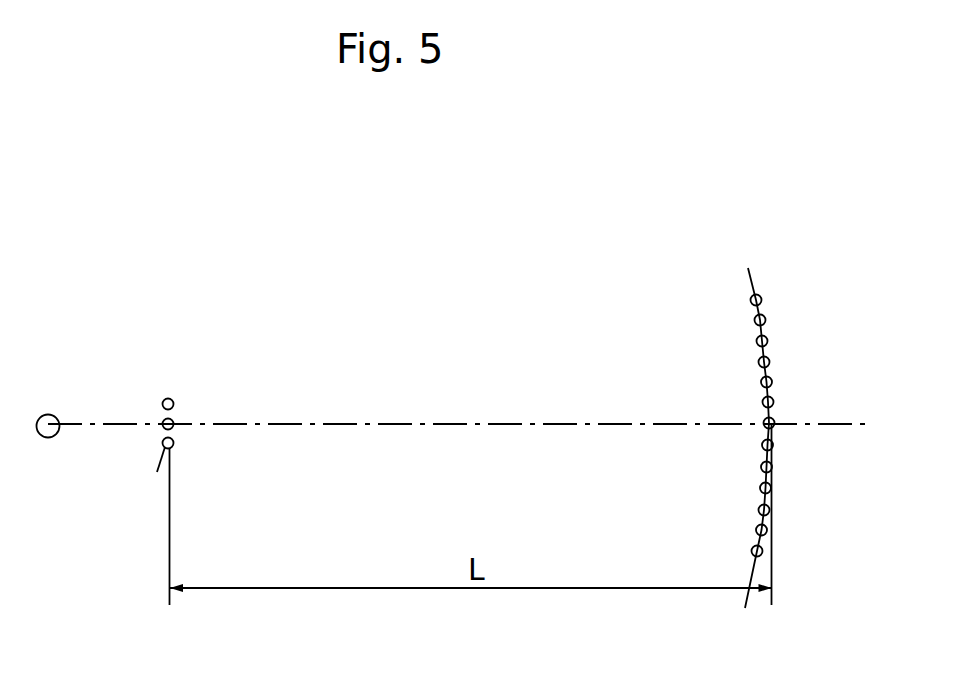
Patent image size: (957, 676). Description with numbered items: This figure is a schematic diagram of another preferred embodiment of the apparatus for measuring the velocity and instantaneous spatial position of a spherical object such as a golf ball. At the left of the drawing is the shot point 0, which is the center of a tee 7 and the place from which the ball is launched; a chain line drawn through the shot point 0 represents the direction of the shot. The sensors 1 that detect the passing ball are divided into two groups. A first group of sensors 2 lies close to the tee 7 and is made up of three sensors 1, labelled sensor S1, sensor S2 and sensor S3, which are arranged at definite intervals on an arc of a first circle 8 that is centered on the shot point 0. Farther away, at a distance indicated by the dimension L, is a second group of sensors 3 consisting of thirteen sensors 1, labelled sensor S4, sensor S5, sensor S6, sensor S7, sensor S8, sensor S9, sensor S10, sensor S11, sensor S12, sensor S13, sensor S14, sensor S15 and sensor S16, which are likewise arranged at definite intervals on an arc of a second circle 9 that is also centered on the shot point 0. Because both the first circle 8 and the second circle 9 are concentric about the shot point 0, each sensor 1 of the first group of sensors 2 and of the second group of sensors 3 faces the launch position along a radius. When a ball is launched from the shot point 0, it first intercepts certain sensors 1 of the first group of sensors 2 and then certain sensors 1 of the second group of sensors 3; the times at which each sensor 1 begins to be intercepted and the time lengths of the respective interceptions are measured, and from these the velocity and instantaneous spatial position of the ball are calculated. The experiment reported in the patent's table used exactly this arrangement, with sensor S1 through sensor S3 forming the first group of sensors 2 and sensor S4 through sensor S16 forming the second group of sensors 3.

The shot point 0 is at (47, 418).
The tee 7 is at (52, 437).
The sensor 1 is at (488, 427).
The first group of sensors 2 is at (176, 448).
The second group of sensors 3 is at (747, 427).
The first circle 8 is at (176, 448).
The second circle 9 is at (747, 427).
The sensor S1 is at (173, 405).
The sensor S2 is at (163, 420).
The sensor S3 is at (135, 480).
The sensor S4 is at (750, 296).
The sensor S5 is at (765, 318).
The sensor S6 is at (756, 341).
The sensor S7 is at (772, 362).
The sensor S8 is at (761, 382).
The sensor S9 is at (774, 397).
The sensor S10 is at (775, 417).
The sensor S11 is at (772, 448).
The sensor S12 is at (765, 463).
The sensor S13 is at (771, 489).
The sensor S14 is at (759, 514).
The sensor S15 is at (768, 535).
The sensor S16 is at (775, 553).